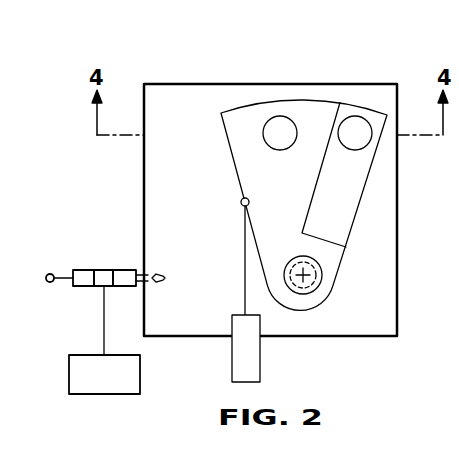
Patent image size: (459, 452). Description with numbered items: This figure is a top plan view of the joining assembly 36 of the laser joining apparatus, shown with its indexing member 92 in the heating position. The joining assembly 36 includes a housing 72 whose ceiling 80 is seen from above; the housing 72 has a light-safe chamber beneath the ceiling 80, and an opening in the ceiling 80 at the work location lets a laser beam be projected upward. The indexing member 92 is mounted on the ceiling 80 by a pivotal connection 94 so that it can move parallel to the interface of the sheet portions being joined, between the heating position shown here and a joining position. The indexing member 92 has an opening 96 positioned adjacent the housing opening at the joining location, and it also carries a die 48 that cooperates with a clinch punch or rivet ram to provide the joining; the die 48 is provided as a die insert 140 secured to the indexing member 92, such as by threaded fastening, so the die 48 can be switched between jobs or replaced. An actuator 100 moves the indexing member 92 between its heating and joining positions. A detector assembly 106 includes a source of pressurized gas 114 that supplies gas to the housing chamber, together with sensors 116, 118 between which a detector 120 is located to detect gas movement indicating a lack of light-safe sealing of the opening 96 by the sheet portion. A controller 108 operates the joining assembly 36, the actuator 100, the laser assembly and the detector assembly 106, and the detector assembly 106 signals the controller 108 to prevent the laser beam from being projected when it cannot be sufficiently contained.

The joining assembly 36 is at (193, 58).
The die 48 is at (355, 135).
The housing 72 is at (399, 298).
The ceiling 80 is at (347, 322).
The indexing member 92 is at (232, 155).
The pivotal connection 94 is at (318, 291).
The opening 96 is at (270, 125).
The actuator 100 is at (232, 358).
The detector assembly 106 is at (93, 295).
The controller 108 is at (104, 374).
The source of pressurized gas 114 is at (50, 274).
The sensor 116 is at (86, 268).
The sensor 118 is at (125, 268).
The detector 120 is at (108, 268).
The die insert 140 is at (350, 182).